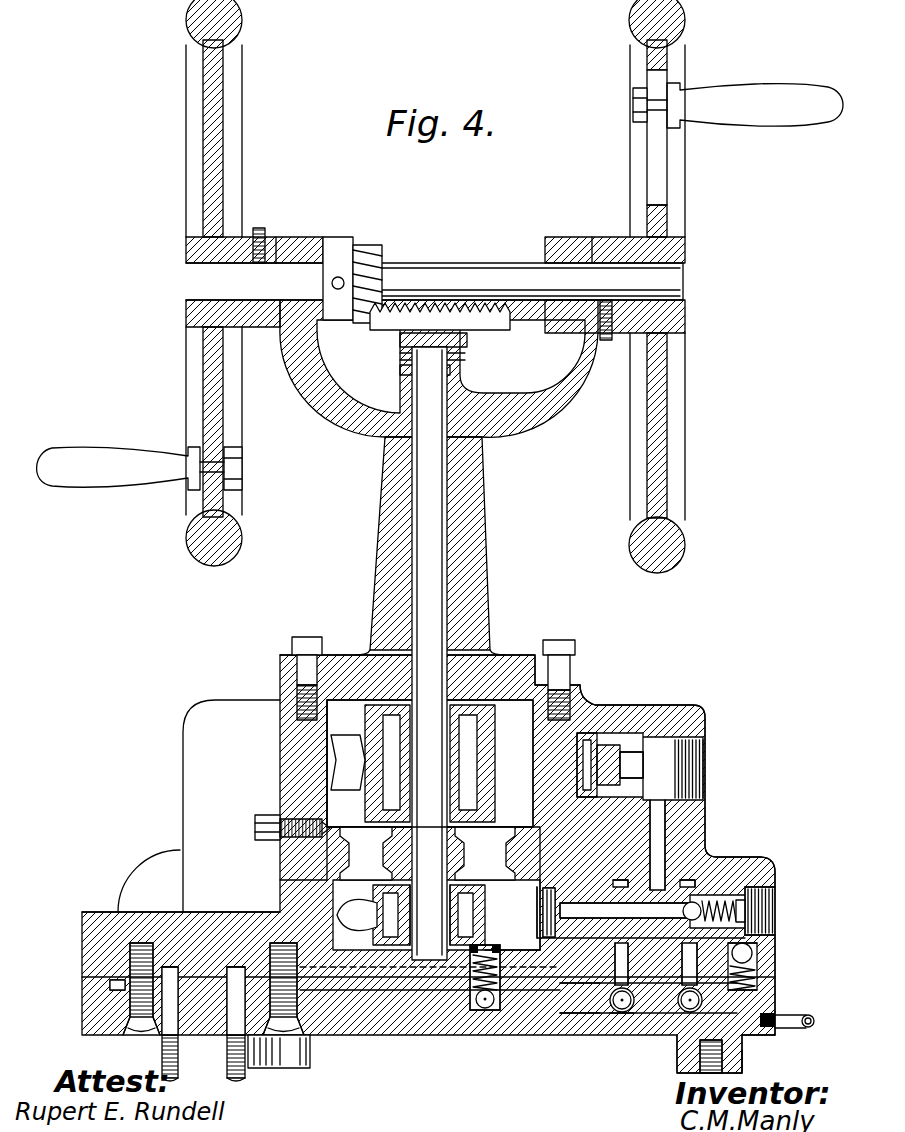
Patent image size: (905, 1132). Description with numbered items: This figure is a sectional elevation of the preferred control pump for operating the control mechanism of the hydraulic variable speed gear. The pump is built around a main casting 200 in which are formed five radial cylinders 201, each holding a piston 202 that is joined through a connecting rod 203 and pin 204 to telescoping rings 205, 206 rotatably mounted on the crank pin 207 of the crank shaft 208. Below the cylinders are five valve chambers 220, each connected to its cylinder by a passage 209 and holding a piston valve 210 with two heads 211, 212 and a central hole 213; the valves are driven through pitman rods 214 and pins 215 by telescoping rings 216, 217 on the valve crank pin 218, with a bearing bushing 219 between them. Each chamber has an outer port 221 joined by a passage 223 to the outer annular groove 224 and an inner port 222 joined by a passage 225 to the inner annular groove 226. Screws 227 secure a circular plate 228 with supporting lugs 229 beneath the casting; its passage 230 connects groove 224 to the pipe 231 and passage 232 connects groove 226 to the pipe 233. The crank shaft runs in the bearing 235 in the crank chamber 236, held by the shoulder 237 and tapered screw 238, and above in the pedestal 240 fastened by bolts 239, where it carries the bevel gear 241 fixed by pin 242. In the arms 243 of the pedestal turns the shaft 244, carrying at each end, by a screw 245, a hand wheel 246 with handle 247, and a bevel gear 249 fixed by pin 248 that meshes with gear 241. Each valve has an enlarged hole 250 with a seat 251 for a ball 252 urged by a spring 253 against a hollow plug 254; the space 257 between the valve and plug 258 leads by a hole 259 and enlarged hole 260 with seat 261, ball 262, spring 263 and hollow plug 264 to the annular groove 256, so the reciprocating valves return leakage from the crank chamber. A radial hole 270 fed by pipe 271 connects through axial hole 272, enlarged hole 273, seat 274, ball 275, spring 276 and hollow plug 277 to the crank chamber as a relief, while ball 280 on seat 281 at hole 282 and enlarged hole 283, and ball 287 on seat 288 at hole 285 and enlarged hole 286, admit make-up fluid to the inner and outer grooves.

The main casting 200 is at (702, 722).
The radial cylinder 201 is at (575, 718).
The piston 202 is at (670, 716).
The connecting rod 203 is at (360, 765).
The pin 204 is at (627, 745).
The telescoping ring 205 is at (517, 700).
The telescoping ring 206 is at (427, 853).
The crank pin 207 is at (505, 655).
The crank shaft 208 is at (430, 612).
The passage 209 is at (657, 830).
The piston valve 210 is at (706, 858).
The valve head 211 is at (770, 930).
The valve head 212 is at (583, 910).
The hole 213 is at (540, 940).
The pitman rod 214 is at (515, 952).
The pin 215 is at (530, 933).
The telescoping ring 216 is at (432, 947).
The telescoping ring 217 is at (542, 900).
The valve crank pin 218 is at (432, 927).
The bearing bushing 219 is at (377, 943).
The valve chamber 220 is at (776, 870).
The outer port 221 is at (775, 1025).
The inner port 222 is at (690, 882).
The passage 223 is at (630, 998).
The outer annular groove 224 is at (780, 1033).
The passage 225 is at (620, 882).
The inner annular groove 226 is at (233, 967).
The screw 227 is at (135, 1025).
The circular plate 228 is at (345, 1020).
The supporting lug 229 is at (290, 1050).
The passage 230 is at (170, 1010).
The pipe 231 is at (182, 1060).
The passage 232 is at (240, 1077).
The pipe 233 is at (230, 1075).
The bearing 235 is at (343, 848).
The crank chamber 236 is at (343, 800).
The shoulder 237 is at (330, 880).
The tapered screw 238 is at (270, 830).
The bolt 239 is at (570, 642).
The pedestal 240 is at (478, 548).
The bevel gear 241 is at (470, 340).
The pin 242 is at (470, 355).
The arm 243 is at (338, 405).
The shaft 244 is at (497, 278).
The screw 245 is at (259, 238).
The hand wheel 246 is at (640, 548).
The handle 247 is at (782, 112).
The pin 248 is at (339, 277).
The bevel gear 249 is at (381, 250).
The enlarged hole 250 is at (755, 915).
The seat 251 is at (745, 895).
The ball 252 is at (752, 903).
The spring 253 is at (763, 887).
The hollow plug 254 is at (732, 903).
The annular groove 256 is at (110, 985).
The space 257 is at (760, 884).
The plug 258 is at (770, 895).
The hole 259 is at (752, 946).
The enlarged hole 260 is at (772, 985).
The seat 261 is at (756, 958).
The ball 262 is at (762, 970).
The spring 263 is at (780, 972).
The hollow plug 264 is at (812, 1022).
The radial hole 270 is at (560, 1017).
The pipe 271 is at (783, 1022).
The axial hole 272 is at (481, 997).
The enlarged hole 273 is at (473, 945).
The seat 274 is at (487, 1007).
The ball 275 is at (480, 947).
The spring 276 is at (472, 947).
The hollow plug 277 is at (490, 952).
The ball 280 is at (623, 1012).
The seat 281 is at (612, 1033).
The hole 282 is at (614, 1010).
The enlarged hole 283 is at (625, 1003).
The hole 285 is at (712, 1065).
The enlarged hole 286 is at (745, 1030).
The ball 287 is at (745, 1053).
The seat 288 is at (688, 1012).